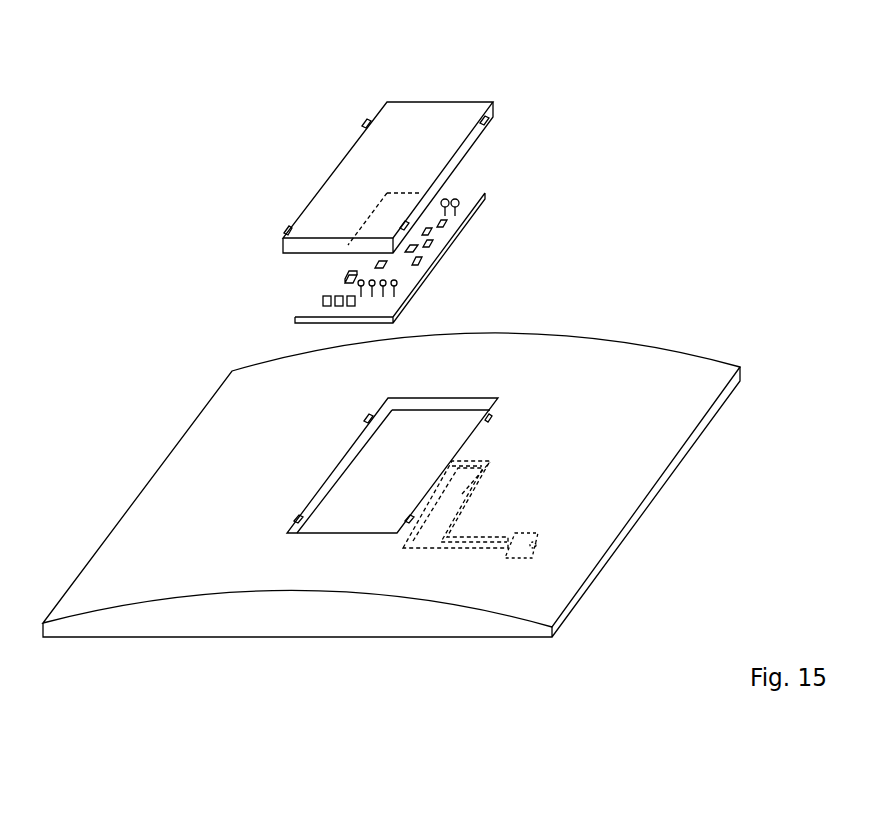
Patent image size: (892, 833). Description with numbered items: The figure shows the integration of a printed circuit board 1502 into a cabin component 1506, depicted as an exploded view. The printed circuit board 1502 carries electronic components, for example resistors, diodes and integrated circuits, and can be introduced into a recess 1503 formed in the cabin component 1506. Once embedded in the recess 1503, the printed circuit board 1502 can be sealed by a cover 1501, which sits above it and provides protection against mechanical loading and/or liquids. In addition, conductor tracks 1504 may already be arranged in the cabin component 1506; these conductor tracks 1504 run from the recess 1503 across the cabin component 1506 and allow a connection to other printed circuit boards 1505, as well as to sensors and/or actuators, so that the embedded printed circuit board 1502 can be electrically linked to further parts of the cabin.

The cover 1501 is at (425, 120).
The printed circuit board 1502 is at (475, 210).
The recess 1503 is at (418, 481).
The conductor tracks 1504 is at (470, 490).
The other printed circuit boards 1505 is at (542, 545).
The cabin component 1506 is at (608, 358).